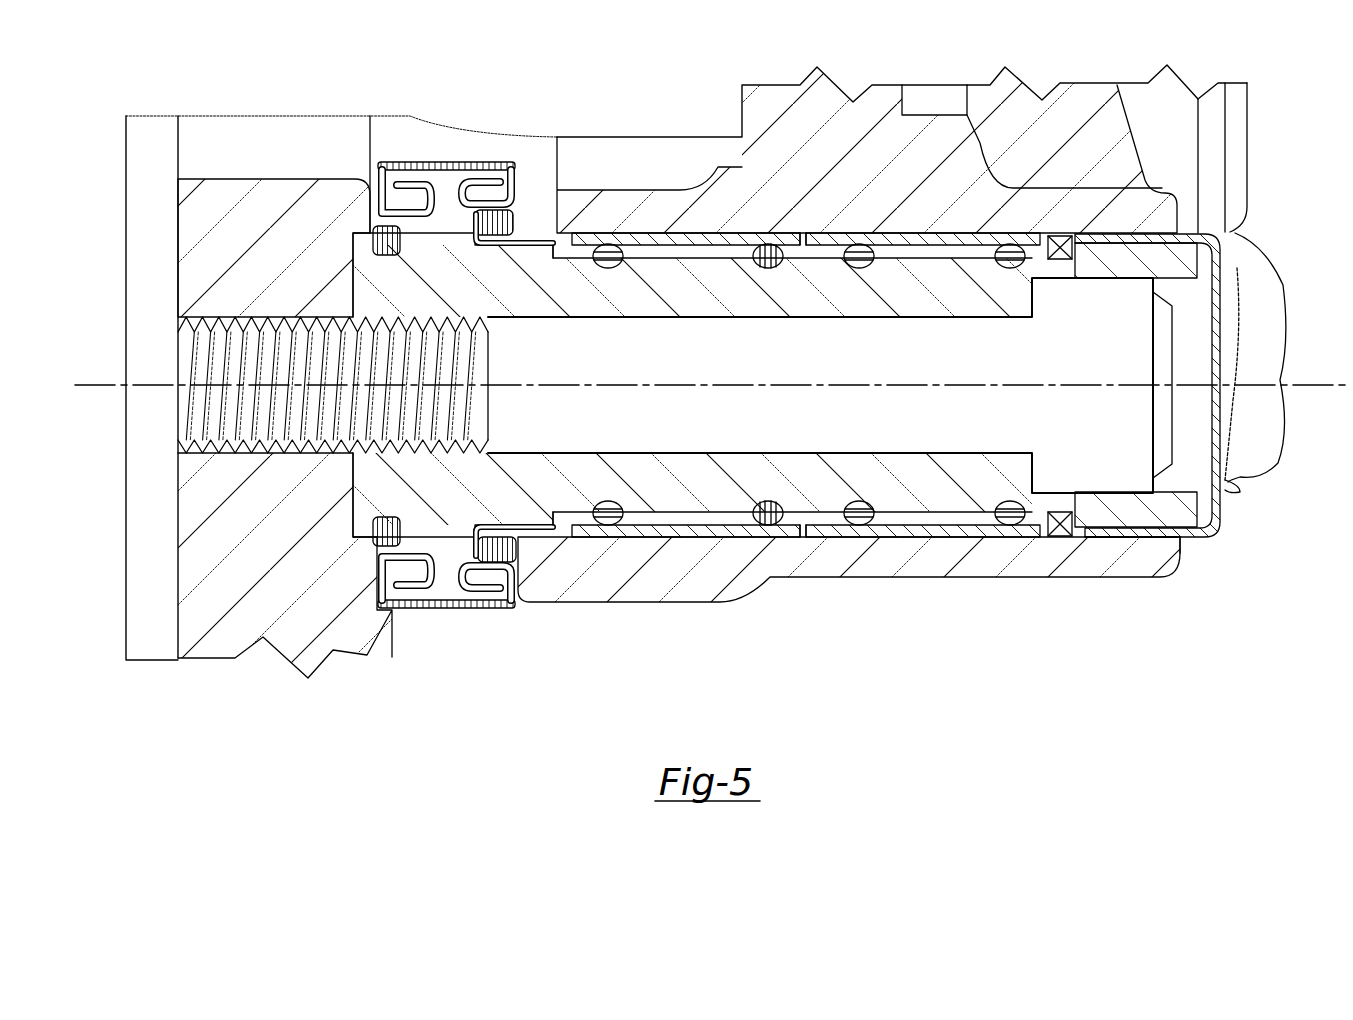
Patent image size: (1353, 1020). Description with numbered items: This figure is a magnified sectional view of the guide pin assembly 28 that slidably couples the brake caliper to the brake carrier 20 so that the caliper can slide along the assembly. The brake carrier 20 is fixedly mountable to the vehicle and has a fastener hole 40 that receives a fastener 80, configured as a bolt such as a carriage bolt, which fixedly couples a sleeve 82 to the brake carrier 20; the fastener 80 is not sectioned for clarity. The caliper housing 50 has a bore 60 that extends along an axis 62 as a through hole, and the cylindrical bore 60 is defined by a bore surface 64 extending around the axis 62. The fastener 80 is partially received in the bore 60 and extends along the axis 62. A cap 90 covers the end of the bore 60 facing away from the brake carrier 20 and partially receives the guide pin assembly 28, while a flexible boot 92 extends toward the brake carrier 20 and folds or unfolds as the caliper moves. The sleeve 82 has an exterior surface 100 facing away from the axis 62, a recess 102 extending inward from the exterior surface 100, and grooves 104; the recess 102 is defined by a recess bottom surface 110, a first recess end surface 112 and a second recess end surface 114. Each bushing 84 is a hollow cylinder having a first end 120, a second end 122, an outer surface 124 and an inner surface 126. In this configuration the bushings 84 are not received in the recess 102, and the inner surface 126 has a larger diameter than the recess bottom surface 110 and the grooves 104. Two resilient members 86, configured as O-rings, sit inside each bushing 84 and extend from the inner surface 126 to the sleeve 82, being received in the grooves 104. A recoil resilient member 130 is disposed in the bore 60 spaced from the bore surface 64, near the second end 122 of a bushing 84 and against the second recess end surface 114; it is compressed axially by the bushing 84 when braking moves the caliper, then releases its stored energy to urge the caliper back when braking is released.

The brake carrier 20 is at (266, 604).
The guide pin assembly 28 is at (1190, 347).
The fastener hole 40 is at (197, 433).
The caliper housing 50 is at (841, 136).
The bore 60 is at (1183, 523).
The axis 62 is at (100, 383).
The bore surface 64 is at (1140, 525).
The fastener 80 is at (793, 364).
The sleeve 82 is at (426, 494).
The bushing 84 is at (900, 233).
The resilient member 86 is at (760, 500).
The cap 90 is at (1222, 407).
The flexible boot 92 is at (433, 612).
The exterior surface 100 is at (1105, 530).
The recess 102 is at (561, 256).
The groove 104 is at (750, 268).
The recess bottom surface 110 is at (1040, 262).
The first recess end surface 112 is at (555, 515).
The second recess end surface 114 is at (1058, 515).
The first end 120 is at (803, 530).
The second end 122 is at (807, 537).
The outer surface 124 is at (717, 540).
The inner surface 126 is at (683, 510).
The recoil resilient member 130 is at (1062, 235).